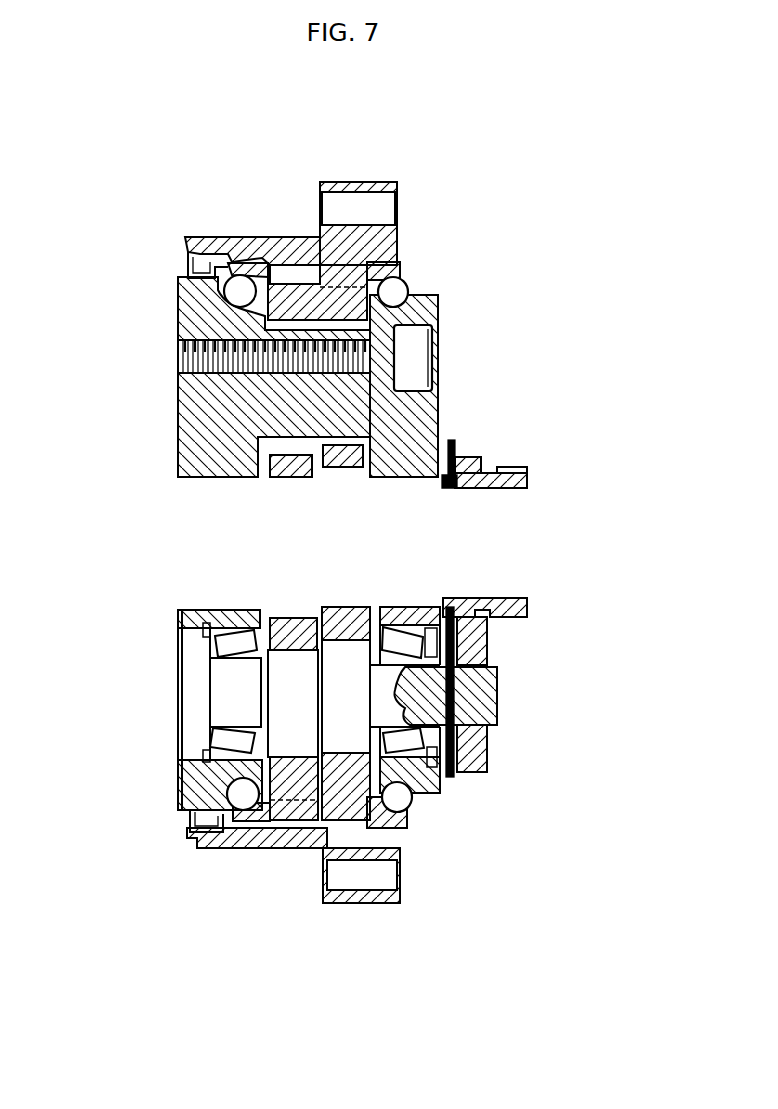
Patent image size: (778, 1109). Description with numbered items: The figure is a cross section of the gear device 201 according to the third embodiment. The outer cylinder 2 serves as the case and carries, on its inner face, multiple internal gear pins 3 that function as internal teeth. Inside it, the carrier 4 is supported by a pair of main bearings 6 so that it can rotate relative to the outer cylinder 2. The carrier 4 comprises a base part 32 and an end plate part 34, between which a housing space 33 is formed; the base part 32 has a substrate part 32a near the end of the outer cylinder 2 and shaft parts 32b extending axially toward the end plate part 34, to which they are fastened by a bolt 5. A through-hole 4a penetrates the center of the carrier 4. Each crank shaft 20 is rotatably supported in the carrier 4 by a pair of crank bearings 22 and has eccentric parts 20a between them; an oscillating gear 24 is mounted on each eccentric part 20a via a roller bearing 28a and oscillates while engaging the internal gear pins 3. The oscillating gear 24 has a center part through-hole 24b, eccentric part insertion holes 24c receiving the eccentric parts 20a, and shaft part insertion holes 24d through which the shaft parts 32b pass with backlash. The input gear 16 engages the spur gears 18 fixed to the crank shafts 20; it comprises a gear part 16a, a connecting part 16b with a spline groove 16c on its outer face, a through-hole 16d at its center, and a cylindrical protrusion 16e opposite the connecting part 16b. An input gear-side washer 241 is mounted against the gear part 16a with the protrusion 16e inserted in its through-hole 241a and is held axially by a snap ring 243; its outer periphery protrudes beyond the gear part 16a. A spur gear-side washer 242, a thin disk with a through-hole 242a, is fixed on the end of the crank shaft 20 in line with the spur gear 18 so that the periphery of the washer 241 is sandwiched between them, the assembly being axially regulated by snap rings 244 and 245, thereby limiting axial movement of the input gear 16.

The outer cylinder 2 is at (262, 243).
The internal gear pin 3 is at (303, 273).
The carrier 4 is at (172, 812).
The through-hole 4a is at (200, 608).
The bolt 5 is at (420, 340).
The main bearing 6 is at (243, 268).
The input gear 16 is at (503, 467).
The gear part 16a is at (478, 460).
The connecting part 16b is at (523, 487).
The spline groove 16c is at (520, 620).
The through-hole 16d is at (473, 488).
The cylindrical protrusion 16e is at (450, 483).
The spur gear 18 is at (470, 743).
The crank shaft 20 is at (490, 693).
The eccentric part 20a is at (268, 738).
The crank bearing 22 is at (212, 785).
The oscillating gear 24 is at (345, 700).
The center part through-hole 24b is at (233, 623).
The eccentric part insertion hole 24c is at (260, 677).
The shaft part insertion hole 24d is at (335, 442).
The roller bearing 28a is at (288, 725).
The base part 32 is at (203, 310).
The substrate part 32a is at (200, 422).
The shaft part 32b is at (350, 407).
The housing space 33 is at (285, 603).
The end plate part 34 is at (420, 393).
The gear device 201 is at (460, 314).
The input gear-side washer 241 is at (452, 473).
The through-hole 241a is at (453, 483).
The spur gear-side washer 242 is at (447, 777).
The through-hole 242a is at (460, 703).
The snap ring 243 is at (425, 450).
The snap ring 244 is at (410, 712).
The snap ring 245 is at (490, 658).